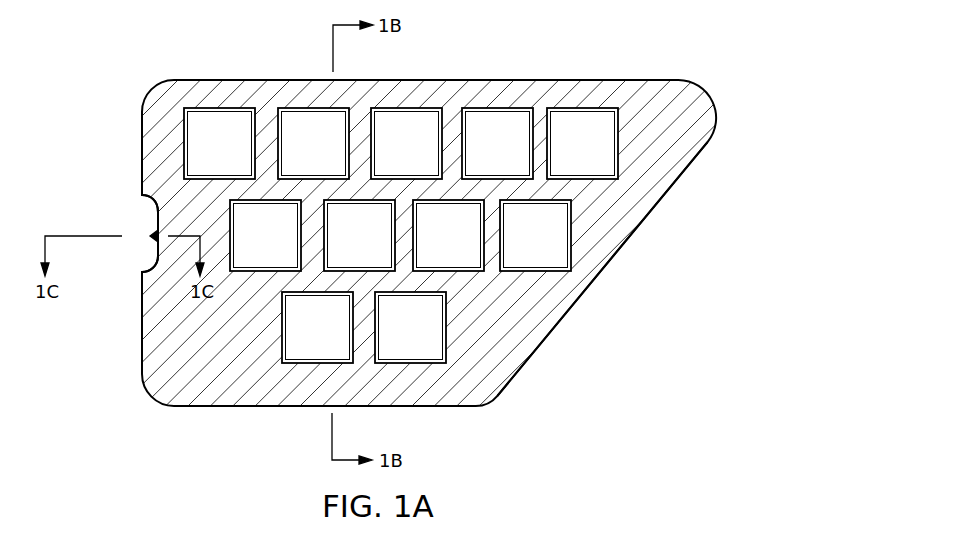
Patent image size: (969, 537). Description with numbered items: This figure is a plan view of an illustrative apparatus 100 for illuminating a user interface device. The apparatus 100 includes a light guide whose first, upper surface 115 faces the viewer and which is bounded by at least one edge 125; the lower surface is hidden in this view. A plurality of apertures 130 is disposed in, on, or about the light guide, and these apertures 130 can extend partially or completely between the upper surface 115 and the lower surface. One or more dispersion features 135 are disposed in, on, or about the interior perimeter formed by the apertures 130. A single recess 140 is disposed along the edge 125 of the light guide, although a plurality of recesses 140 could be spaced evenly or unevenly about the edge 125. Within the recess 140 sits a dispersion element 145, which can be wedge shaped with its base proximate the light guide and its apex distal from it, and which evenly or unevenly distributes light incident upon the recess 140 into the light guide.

The apparatus 100 is at (414, 208).
The first (upper) surface 115 is at (509, 334).
The edge 125 is at (675, 182).
The apertures 130 is at (327, 340).
The dispersion features 135 is at (567, 222).
The recess 140 is at (155, 260).
The dispersion element 145 is at (150, 236).